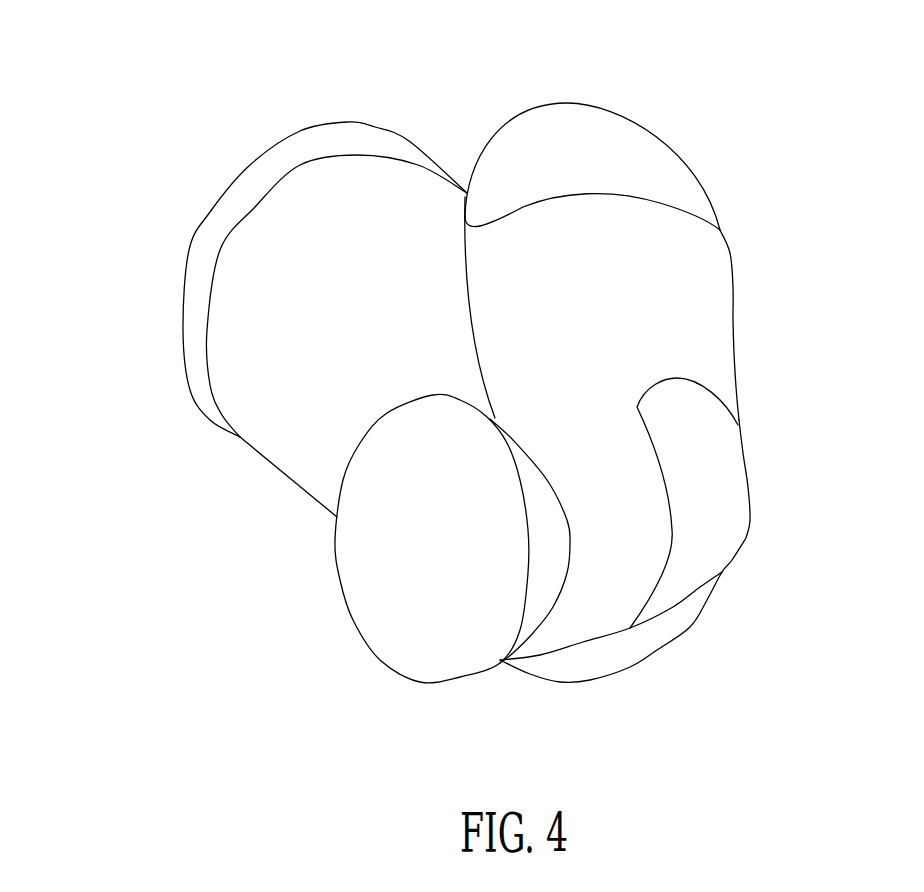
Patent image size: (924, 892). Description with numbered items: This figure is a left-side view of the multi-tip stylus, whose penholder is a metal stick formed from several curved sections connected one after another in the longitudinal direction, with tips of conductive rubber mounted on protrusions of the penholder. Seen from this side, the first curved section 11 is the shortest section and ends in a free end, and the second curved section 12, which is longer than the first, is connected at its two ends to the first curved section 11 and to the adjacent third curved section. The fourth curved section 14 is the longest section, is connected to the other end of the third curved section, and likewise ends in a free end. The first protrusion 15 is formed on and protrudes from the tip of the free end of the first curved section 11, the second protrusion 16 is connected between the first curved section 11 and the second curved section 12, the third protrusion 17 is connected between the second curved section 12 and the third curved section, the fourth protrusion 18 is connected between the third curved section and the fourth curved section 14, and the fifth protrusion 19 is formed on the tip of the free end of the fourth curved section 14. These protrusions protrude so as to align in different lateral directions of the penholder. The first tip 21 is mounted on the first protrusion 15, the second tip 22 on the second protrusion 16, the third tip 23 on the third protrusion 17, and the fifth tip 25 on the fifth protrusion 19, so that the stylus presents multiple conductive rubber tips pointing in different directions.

The first curved section 11 is at (588, 628).
The second curved section 12 is at (712, 265).
The fourth curved section 14 is at (262, 427).
The first protrusion 15 is at (500, 663).
The second protrusion 16 is at (750, 538).
The third protrusion 17 is at (627, 112).
The fourth protrusion 18 is at (690, 628).
The fifth protrusion 19 is at (298, 163).
The first tip 21 is at (390, 642).
The second tip 22 is at (737, 478).
The third tip 23 is at (670, 165).
The fifth tip 25 is at (375, 127).